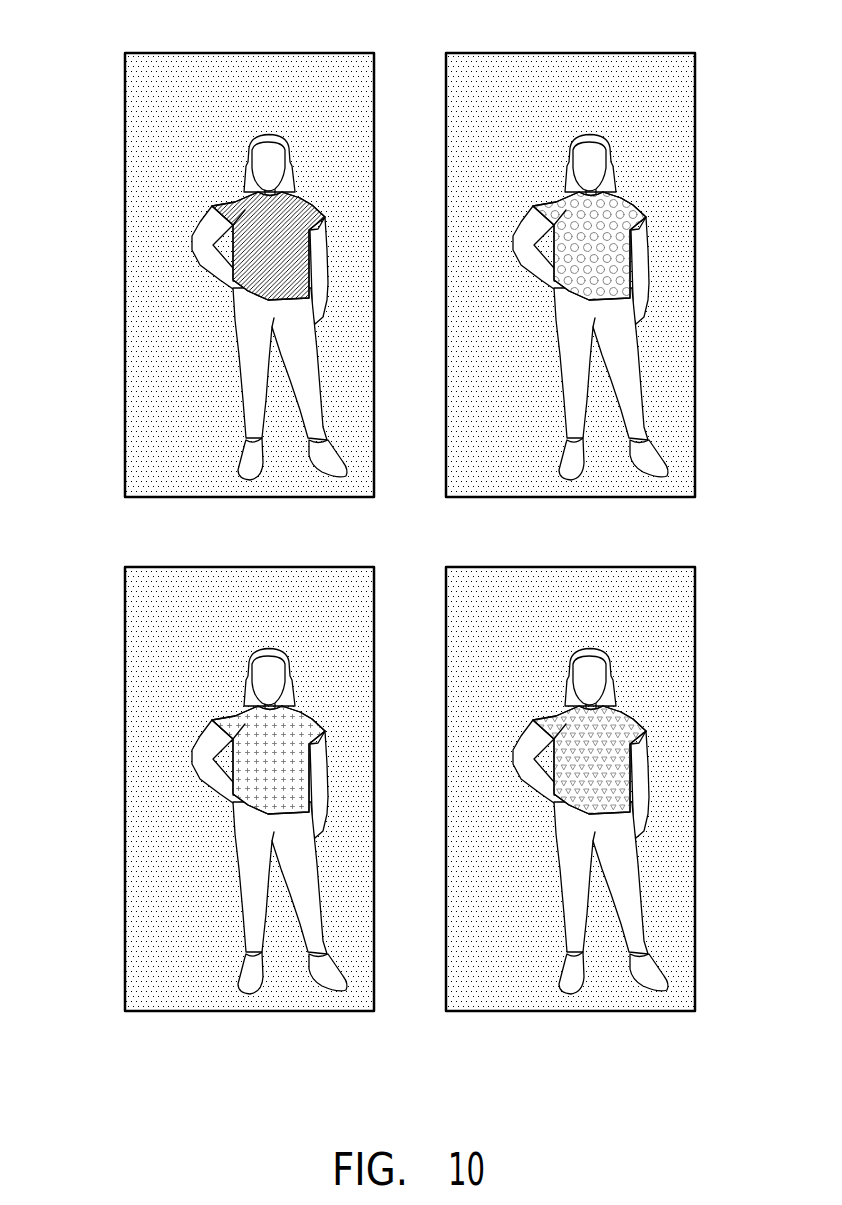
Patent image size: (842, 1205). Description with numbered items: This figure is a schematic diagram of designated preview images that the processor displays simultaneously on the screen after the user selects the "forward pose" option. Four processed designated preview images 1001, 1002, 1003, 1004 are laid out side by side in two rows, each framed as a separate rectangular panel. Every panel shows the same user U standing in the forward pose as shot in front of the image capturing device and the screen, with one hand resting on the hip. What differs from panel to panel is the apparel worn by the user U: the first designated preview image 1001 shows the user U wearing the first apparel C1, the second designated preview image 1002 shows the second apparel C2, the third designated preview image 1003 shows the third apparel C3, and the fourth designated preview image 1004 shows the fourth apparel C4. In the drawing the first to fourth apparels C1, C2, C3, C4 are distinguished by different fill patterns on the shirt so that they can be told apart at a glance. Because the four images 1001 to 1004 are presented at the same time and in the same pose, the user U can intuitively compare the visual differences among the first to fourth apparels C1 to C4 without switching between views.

The designated preview image 1001 is at (124, 190).
The designated preview image 1002 is at (696, 189).
The designated preview image 1003 is at (124, 704).
The designated preview image 1004 is at (696, 703).
The user U is at (251, 152).
The first apparel C1 is at (227, 204).
The second apparel C2 is at (572, 236).
The third apparel C3 is at (251, 750).
The fourth apparel C4 is at (572, 750).